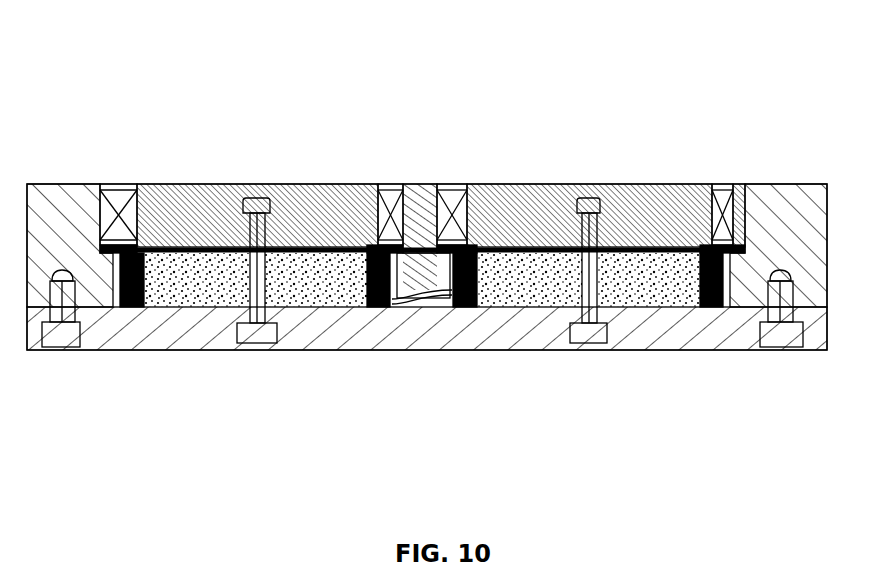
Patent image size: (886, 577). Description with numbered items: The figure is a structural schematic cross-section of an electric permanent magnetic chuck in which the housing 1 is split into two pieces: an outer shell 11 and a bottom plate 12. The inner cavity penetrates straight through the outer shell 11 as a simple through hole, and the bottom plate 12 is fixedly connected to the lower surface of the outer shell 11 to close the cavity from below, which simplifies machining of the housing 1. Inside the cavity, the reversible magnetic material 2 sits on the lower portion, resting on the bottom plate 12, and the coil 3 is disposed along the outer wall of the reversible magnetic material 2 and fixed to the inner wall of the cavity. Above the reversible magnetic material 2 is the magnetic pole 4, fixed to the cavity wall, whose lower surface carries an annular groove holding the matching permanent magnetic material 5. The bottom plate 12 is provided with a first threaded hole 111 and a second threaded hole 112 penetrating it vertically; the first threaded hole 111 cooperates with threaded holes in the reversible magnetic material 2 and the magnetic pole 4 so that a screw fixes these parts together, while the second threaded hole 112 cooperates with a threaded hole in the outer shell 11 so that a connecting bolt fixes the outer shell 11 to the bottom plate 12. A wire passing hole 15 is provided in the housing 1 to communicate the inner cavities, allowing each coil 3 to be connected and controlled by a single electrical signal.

The housing 1 is at (63, 213).
The reversible magnetic material 2 is at (310, 268).
The coil 3 is at (147, 250).
The magnetic pole 4 is at (472, 280).
The permanent magnetic material 5 is at (400, 290).
The outer shell 11 is at (773, 247).
The bottom plate 12 is at (348, 337).
The wire passing hole 15 is at (445, 300).
The first threaded hole 111 is at (258, 350).
The second threaded hole 112 is at (55, 350).